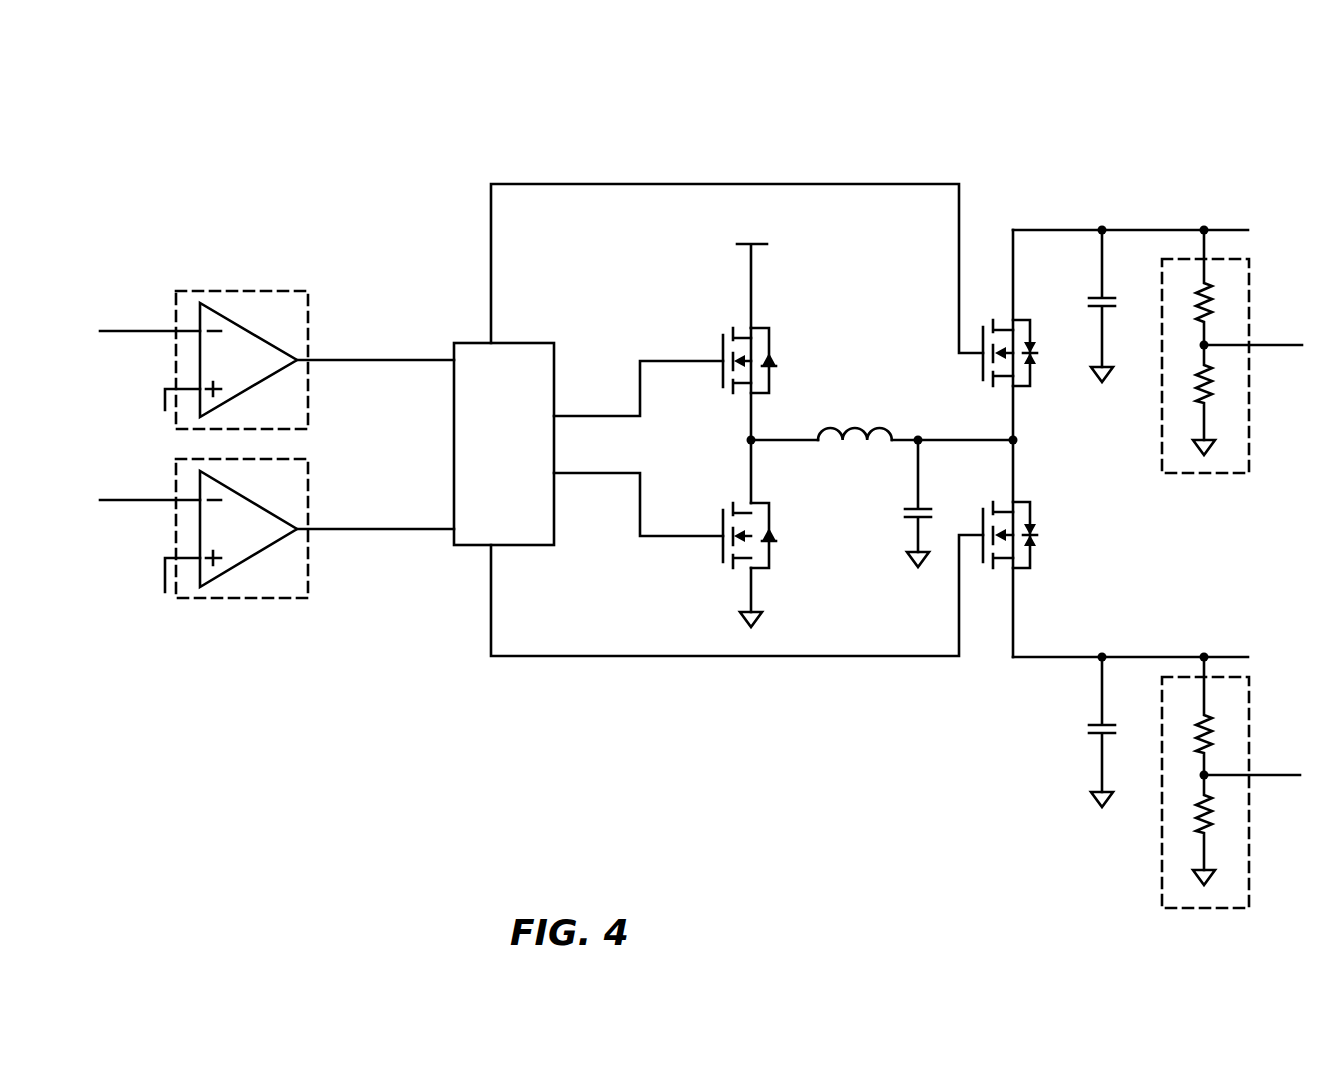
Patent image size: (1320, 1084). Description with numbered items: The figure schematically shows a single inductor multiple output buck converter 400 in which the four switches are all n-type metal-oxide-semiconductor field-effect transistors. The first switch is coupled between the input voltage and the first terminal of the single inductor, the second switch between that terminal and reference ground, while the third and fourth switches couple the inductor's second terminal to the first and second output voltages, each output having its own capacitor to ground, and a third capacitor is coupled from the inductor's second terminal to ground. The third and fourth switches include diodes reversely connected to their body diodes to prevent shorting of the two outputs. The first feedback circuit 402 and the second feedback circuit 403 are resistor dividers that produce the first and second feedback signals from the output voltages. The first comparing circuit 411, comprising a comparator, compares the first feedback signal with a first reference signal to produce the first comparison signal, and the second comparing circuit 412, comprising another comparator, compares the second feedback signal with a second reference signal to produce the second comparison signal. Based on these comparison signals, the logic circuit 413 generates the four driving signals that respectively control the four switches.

The single inductor multiple output buck converter 400 is at (1187, 90).
The first comparing circuit 411 is at (186, 430).
The second comparing circuit 412 is at (188, 600).
The logic circuit 413 is at (468, 549).
The first feedback circuit 402 is at (1184, 474).
The second feedback circuit 403 is at (1182, 909).